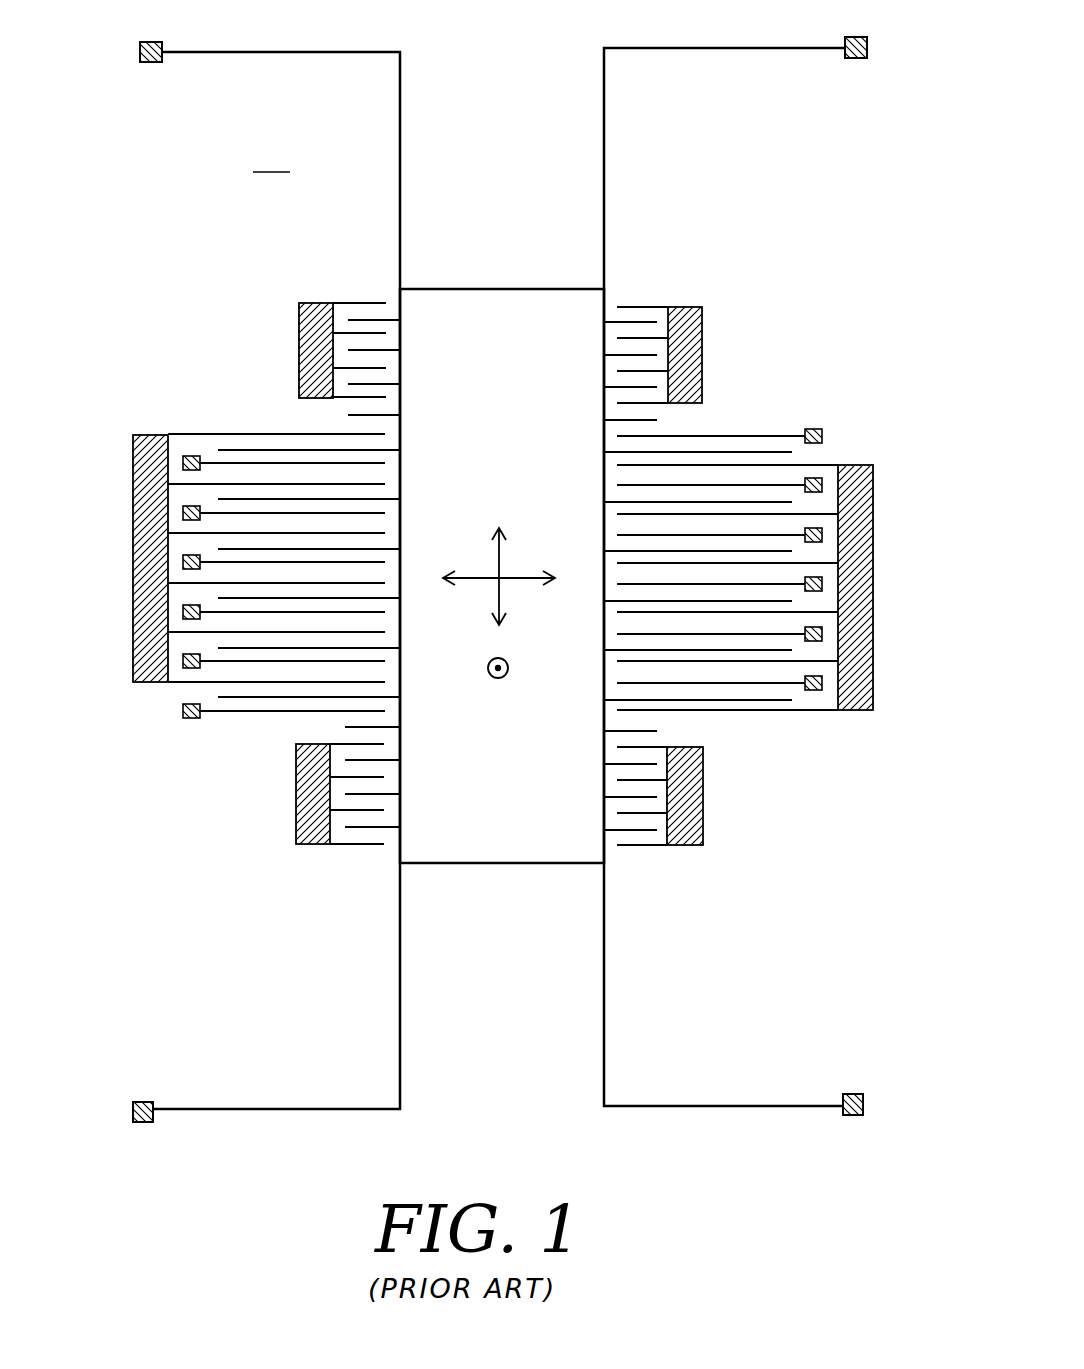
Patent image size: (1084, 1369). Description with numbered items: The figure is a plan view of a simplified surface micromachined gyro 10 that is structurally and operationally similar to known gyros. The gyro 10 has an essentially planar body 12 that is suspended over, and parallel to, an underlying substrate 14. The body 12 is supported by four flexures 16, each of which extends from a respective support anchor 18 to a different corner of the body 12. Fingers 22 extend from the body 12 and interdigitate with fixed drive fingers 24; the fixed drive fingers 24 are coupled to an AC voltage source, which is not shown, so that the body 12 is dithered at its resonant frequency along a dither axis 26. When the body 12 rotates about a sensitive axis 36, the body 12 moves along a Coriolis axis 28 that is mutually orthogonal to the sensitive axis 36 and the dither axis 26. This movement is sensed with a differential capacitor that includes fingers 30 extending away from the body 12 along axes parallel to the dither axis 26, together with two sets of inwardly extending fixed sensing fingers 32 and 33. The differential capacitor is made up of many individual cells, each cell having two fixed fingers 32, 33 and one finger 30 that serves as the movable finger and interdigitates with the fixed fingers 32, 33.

The surface micromachined gyro 10 is at (838, 135).
The planar body 12 is at (520, 431).
The substrate 14 is at (271, 160).
The flexures 16 is at (280, 50).
The support anchor 18 is at (160, 43).
The fingers 22 is at (393, 320).
The fixed drive fingers 24 is at (345, 303).
The dither axis 26 is at (480, 578).
The Coriolis axis 28 is at (499, 550).
The fingers 30 is at (229, 456).
The fixed sensing fingers 32 is at (175, 435).
The fixed sensing fingers 33 is at (264, 463).
The sensitive axis 36 is at (490, 676).